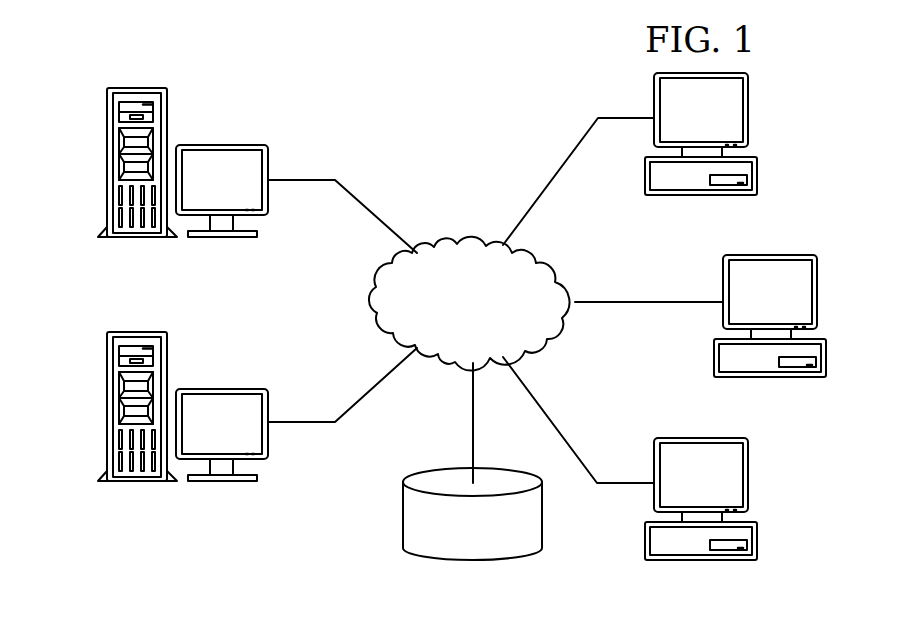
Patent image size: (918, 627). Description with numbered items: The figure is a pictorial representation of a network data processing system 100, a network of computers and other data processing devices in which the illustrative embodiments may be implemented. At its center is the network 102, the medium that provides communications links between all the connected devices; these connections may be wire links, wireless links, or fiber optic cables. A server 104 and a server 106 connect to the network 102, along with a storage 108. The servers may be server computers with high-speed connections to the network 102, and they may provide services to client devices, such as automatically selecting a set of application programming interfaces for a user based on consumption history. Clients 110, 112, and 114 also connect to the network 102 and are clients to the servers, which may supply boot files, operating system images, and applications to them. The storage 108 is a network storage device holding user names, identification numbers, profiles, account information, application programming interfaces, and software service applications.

The network data processing system 100 is at (341, 85).
The network 102 is at (468, 240).
The server 104 is at (107, 163).
The server 106 is at (107, 406).
The storage 108 is at (403, 518).
The client 110 is at (758, 175).
The client 112 is at (827, 358).
The client 114 is at (758, 540).